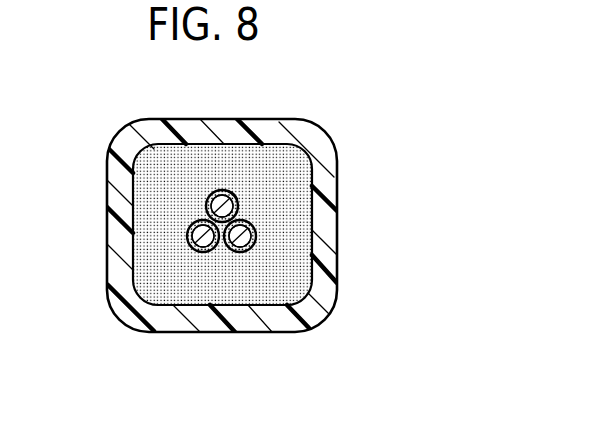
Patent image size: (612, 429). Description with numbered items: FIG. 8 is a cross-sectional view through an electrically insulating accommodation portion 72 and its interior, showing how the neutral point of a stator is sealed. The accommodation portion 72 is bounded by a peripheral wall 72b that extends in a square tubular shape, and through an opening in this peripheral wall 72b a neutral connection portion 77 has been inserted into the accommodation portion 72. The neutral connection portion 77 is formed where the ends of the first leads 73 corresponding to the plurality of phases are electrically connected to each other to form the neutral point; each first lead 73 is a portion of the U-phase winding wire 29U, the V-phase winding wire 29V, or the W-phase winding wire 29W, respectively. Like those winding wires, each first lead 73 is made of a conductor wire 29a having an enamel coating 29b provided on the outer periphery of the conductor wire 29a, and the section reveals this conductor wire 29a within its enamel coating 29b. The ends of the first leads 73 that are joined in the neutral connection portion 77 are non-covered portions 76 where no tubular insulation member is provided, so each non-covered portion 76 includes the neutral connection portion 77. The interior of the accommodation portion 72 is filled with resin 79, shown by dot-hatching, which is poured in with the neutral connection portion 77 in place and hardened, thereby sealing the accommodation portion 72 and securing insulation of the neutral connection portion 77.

The accommodation portion 72 is at (327, 107).
The peripheral wall 72b is at (108, 197).
The enamel coating 29b is at (331, 168).
The resin 79 is at (148, 260).
The neutral connection portion 77 is at (193, 205).
The U-phase winding wire 29U is at (220, 189).
The V-phase winding wire 29V is at (257, 241).
The W-phase winding wire 29W is at (187, 234).
The conductor wire 29a is at (221, 222).
The non-covered portion 76 is at (234, 193).
The first lead 73 is at (250, 212).